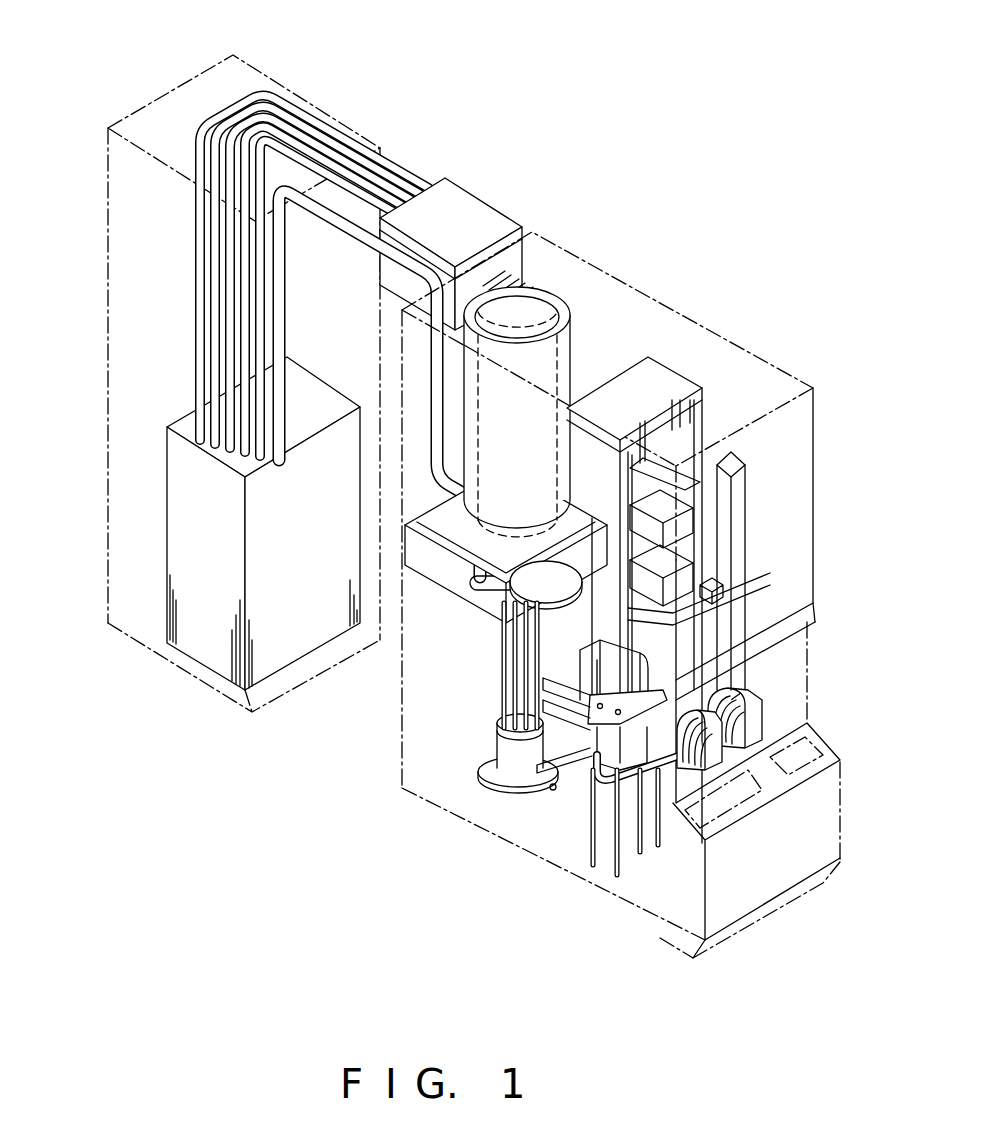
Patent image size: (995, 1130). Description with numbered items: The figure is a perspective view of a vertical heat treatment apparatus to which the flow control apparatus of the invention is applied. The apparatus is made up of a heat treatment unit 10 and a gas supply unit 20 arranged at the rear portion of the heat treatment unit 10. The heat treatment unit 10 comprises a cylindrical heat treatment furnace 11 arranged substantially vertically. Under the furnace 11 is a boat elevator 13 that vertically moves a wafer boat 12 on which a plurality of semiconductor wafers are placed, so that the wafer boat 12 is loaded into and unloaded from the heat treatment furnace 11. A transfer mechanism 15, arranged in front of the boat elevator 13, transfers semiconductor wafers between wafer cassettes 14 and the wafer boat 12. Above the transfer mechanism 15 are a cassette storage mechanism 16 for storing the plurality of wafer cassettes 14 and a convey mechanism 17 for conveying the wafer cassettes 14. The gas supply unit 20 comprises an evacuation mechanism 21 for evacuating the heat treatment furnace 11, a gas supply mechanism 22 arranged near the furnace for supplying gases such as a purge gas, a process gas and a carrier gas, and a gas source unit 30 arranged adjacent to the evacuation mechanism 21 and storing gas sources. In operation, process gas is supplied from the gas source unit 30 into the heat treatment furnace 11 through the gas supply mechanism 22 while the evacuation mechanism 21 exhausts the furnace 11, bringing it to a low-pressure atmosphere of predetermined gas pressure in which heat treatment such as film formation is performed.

The heat treatment unit 10 is at (652, 250).
The heat treatment furnace 11 is at (563, 312).
The wafer boat 12 is at (500, 645).
The boat elevator 13 is at (490, 787).
The wafer cassettes 14 is at (758, 722).
The transfer mechanism 15 is at (557, 722).
The cassette storage mechanism 16 is at (683, 387).
The convey mechanism 17 is at (748, 517).
The gas supply unit 20 is at (341, 78).
The evacuation mechanism 21 is at (333, 623).
The gas supply mechanism 22 is at (483, 208).
The gas source unit 30 is at (167, 553).